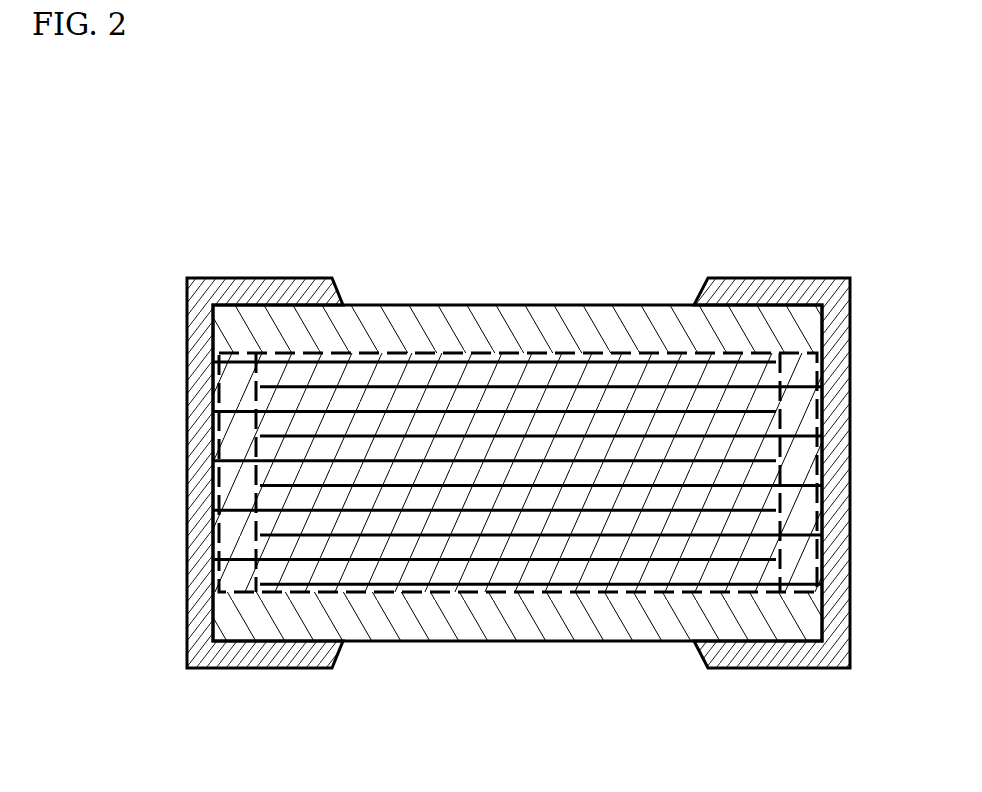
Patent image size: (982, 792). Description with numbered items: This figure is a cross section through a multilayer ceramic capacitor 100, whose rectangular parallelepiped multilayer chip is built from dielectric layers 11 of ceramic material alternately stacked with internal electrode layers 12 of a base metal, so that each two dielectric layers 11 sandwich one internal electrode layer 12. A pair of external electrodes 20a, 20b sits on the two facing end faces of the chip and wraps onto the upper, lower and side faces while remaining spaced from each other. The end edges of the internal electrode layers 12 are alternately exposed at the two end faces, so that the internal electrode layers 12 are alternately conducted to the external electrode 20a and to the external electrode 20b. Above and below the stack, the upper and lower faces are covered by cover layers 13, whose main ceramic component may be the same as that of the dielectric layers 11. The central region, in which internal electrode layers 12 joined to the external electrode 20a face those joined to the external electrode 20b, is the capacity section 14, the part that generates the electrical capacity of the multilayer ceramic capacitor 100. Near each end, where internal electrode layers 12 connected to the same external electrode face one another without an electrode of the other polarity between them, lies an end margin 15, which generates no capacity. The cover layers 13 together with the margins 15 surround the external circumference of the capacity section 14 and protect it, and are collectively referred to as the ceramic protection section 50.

The multilayer ceramic capacitor 100 is at (747, 222).
The dielectric layer 11 is at (642, 545).
The internal electrode layer 12 is at (498, 512).
The cover layer 13 is at (367, 332).
The capacity section 14 is at (527, 350).
The end margin 15 is at (238, 352).
The external electrode 20a is at (213, 278).
The external electrode 20b is at (812, 277).
The ceramic protection section 50 is at (380, 213).